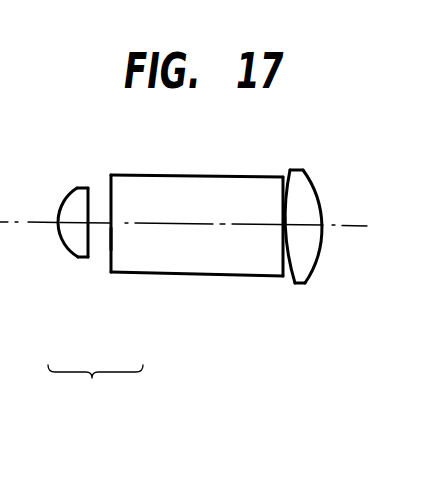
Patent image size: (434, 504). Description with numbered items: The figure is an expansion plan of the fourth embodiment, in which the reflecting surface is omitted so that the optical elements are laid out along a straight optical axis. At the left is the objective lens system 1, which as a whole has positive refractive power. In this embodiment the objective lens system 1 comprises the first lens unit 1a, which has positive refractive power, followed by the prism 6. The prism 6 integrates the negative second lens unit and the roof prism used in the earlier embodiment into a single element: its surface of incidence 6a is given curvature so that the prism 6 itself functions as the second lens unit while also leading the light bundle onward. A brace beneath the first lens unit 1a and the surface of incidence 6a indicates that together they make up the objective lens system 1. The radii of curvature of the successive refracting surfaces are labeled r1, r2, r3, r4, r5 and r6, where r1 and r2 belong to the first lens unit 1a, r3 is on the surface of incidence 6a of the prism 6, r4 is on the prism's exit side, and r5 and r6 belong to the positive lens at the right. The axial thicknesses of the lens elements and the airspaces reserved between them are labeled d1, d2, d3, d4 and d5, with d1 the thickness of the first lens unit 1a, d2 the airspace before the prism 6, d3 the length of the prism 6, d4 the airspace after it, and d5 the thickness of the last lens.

The radius of curvature r1 is at (70, 194).
The radius of curvature r2 is at (94, 196).
The radius of curvature r3 is at (113, 220).
The radius of curvature r4 is at (282, 203).
The radius of curvature r5 is at (292, 171).
The radius of curvature r6 is at (323, 175).
The thickness d1 is at (54, 266).
The airspace d2 is at (98, 290).
The thickness d3 is at (174, 297).
The airspace d4 is at (280, 292).
The thickness d5 is at (330, 286).
The prism 6 is at (196, 246).
The first lens unit 1a is at (77, 251).
The surface of incidence 6a is at (122, 337).
The objective lens system 1 is at (95, 383).